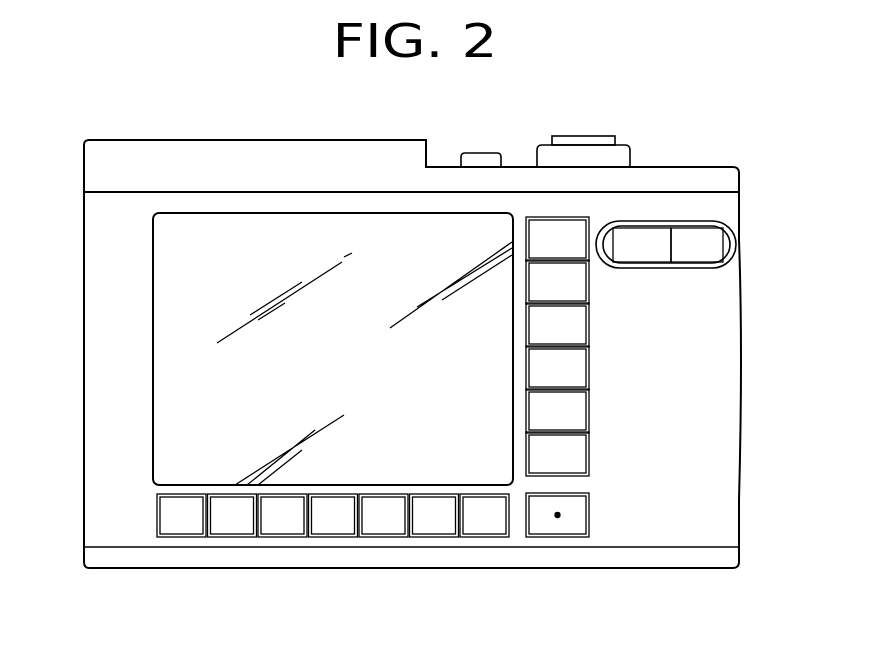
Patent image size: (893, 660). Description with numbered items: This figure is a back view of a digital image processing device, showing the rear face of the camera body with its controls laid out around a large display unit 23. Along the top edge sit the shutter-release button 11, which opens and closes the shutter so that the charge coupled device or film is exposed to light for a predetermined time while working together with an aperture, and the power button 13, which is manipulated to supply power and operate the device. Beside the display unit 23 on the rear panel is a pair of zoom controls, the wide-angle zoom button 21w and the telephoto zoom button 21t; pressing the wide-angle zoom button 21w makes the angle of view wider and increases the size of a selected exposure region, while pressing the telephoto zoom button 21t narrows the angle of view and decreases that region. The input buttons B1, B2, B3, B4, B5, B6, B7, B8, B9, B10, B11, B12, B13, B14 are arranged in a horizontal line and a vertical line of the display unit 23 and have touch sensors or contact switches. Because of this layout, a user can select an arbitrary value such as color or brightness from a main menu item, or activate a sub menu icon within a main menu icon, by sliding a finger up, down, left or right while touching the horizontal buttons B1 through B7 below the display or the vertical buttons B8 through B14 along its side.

The shutter-release button 11 is at (584, 141).
The power button 13 is at (481, 157).
The display unit 23 is at (228, 228).
The wide-angle zoom button 21w is at (642, 245).
The telephoto zoom button 21t is at (697, 245).
The input button B1 is at (181, 515).
The input button B2 is at (232, 515).
The input button B3 is at (282, 515).
The input button B4 is at (333, 515).
The input button B5 is at (383, 515).
The input button B6 is at (434, 515).
The input button B7 is at (484, 515).
The input button B8 is at (557, 239).
The input button B9 is at (557, 282).
The input button B10 is at (557, 325).
The input button B11 is at (557, 368).
The input button B12 is at (557, 411).
The input button B13 is at (557, 454).
The input button B14 is at (589, 515).